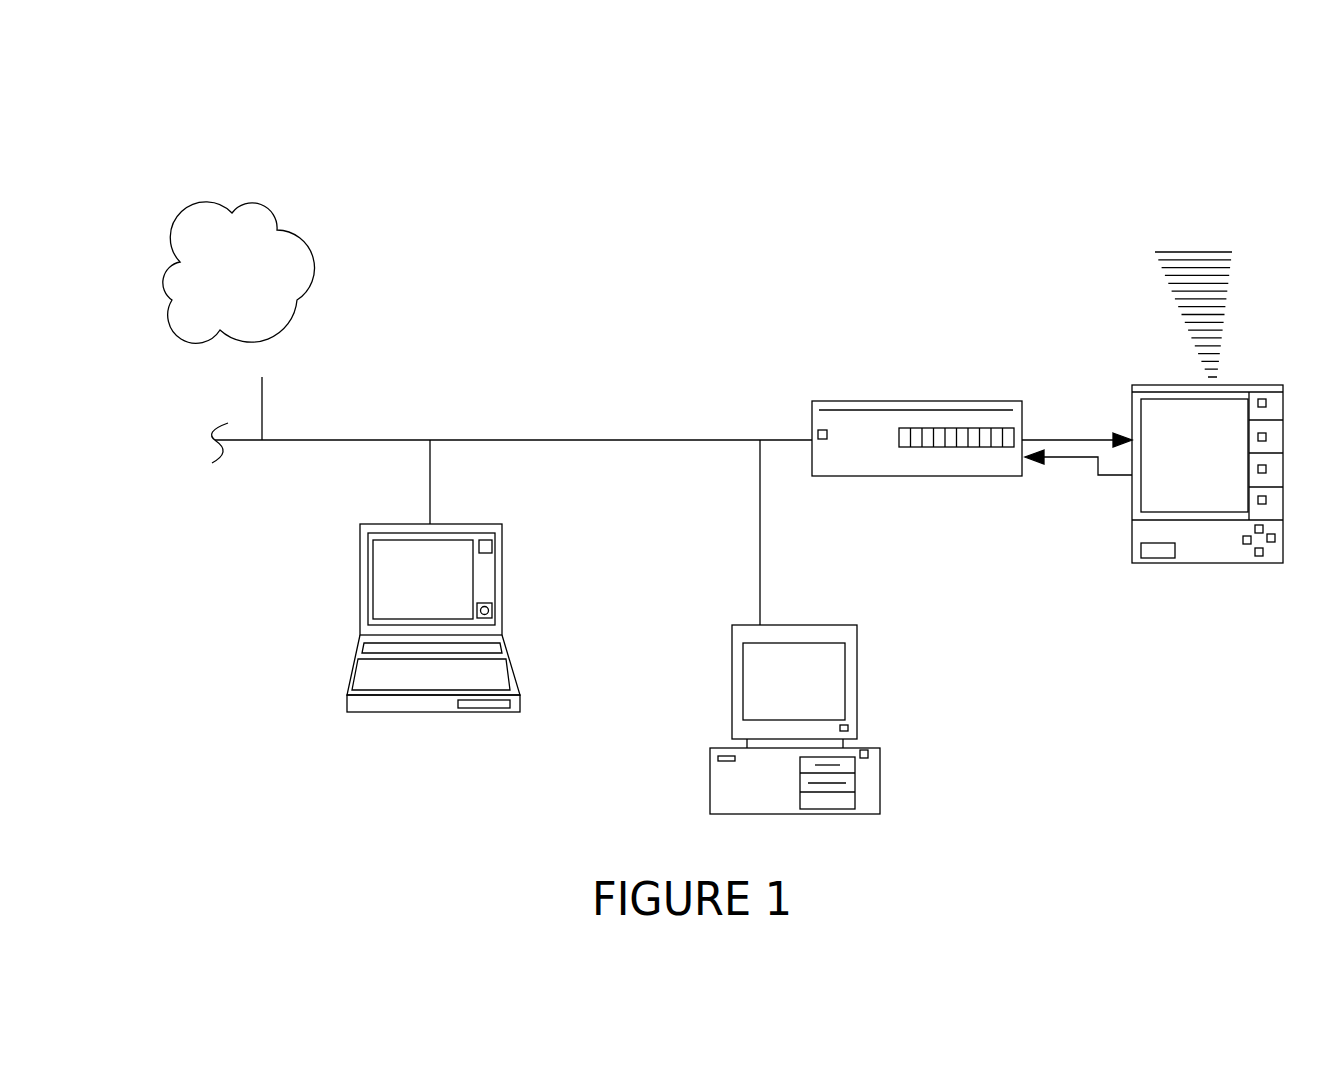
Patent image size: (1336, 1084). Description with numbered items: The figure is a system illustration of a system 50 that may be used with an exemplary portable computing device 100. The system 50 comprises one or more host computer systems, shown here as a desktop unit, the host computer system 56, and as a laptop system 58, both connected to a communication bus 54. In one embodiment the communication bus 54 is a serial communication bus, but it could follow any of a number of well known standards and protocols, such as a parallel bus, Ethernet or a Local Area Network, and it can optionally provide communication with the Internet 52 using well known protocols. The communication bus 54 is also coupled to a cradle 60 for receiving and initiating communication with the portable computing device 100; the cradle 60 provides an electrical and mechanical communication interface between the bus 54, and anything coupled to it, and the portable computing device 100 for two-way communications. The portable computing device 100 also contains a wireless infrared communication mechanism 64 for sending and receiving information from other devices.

The system 50 is at (138, 81).
The Internet 52 is at (321, 229).
The communication bus 54 is at (532, 440).
The host computer system 56 is at (857, 652).
The laptop system 58 is at (475, 524).
The cradle 60 is at (945, 400).
The wireless infrared communication mechanism 64 is at (1157, 298).
The portable computing device 100 is at (1249, 385).